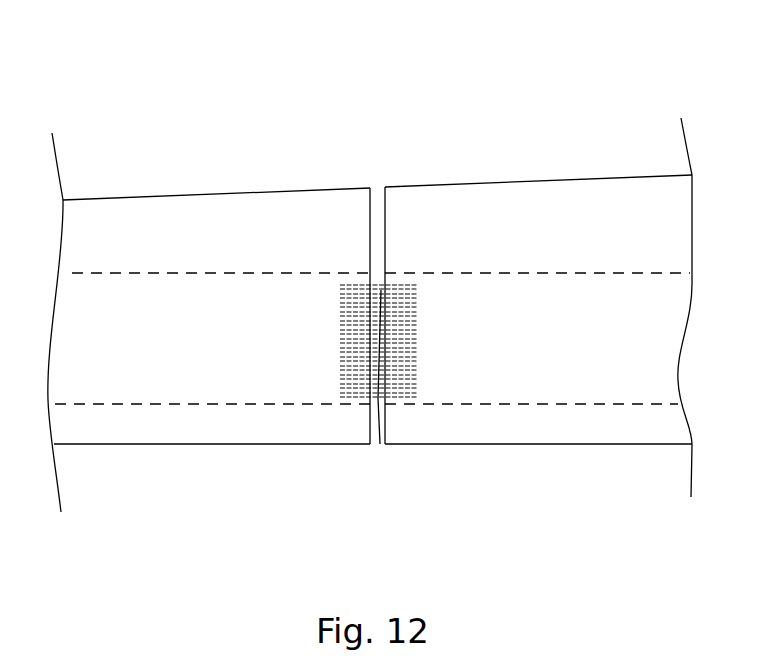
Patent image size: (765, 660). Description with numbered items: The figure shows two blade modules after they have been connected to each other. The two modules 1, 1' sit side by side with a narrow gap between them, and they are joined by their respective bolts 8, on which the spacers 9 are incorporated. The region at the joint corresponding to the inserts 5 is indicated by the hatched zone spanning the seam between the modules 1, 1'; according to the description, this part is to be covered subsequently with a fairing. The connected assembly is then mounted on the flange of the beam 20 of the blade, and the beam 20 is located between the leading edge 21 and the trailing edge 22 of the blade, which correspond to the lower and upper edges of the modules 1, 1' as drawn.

The module 1 is at (209, 304).
The module 1' is at (538, 292).
The inserts 5 is at (350, 283).
The bolts 8 is at (381, 290).
The spacers 9 is at (380, 444).
The beam 20 is at (548, 333).
The leading edge 21 is at (215, 446).
The trailing edge 22 is at (246, 190).